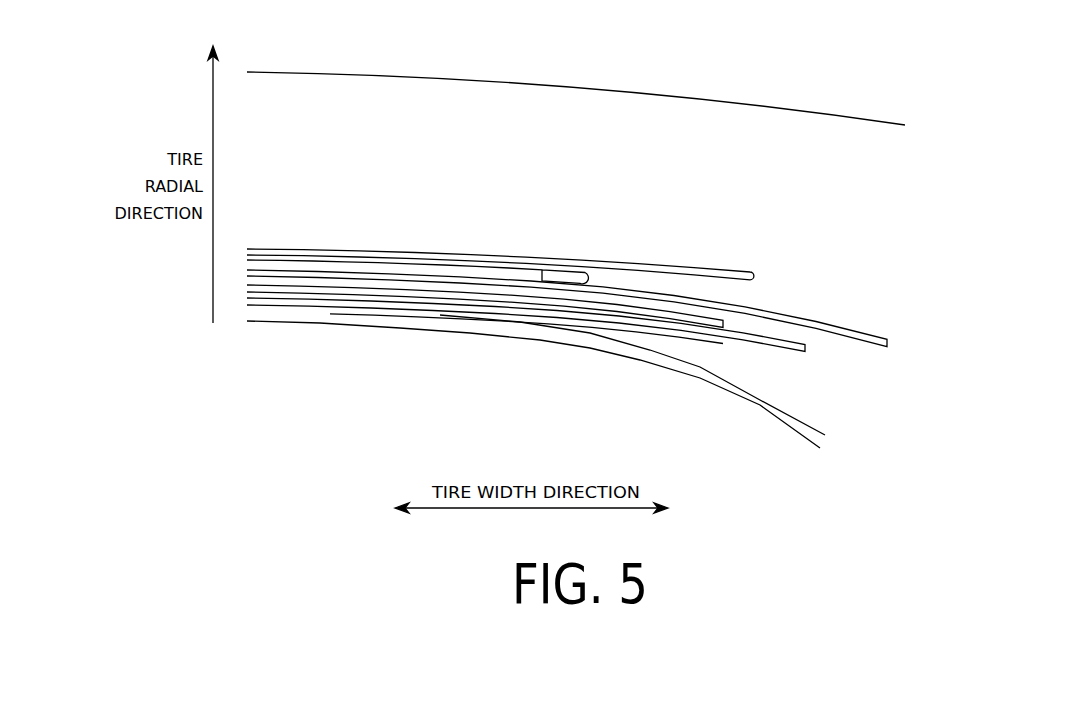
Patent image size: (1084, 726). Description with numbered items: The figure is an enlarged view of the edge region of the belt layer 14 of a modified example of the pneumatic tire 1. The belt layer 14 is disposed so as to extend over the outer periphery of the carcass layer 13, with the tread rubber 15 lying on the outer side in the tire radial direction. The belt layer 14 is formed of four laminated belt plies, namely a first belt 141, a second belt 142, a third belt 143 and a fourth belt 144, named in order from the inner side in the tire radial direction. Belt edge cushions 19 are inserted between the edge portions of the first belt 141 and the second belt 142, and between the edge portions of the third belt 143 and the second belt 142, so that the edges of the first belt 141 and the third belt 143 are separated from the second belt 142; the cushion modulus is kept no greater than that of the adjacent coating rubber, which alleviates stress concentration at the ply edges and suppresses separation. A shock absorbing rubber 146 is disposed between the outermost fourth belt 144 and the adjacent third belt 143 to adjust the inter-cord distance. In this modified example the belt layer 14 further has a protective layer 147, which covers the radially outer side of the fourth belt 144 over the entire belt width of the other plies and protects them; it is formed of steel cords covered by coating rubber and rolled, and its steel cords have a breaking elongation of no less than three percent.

The pneumatic tire 1 is at (777, 58).
The carcass layer 13 is at (623, 349).
The belt layer 14 is at (567, 335).
The first belt 141 is at (325, 362).
The second belt 142 is at (428, 299).
The third belt 143 is at (389, 287).
The fourth belt 144 is at (348, 272).
The shock absorbing rubber 146 is at (573, 266).
The protective layer 147 is at (650, 263).
The tread rubber 15 is at (718, 97).
The belt edge cushion 19 is at (732, 322).